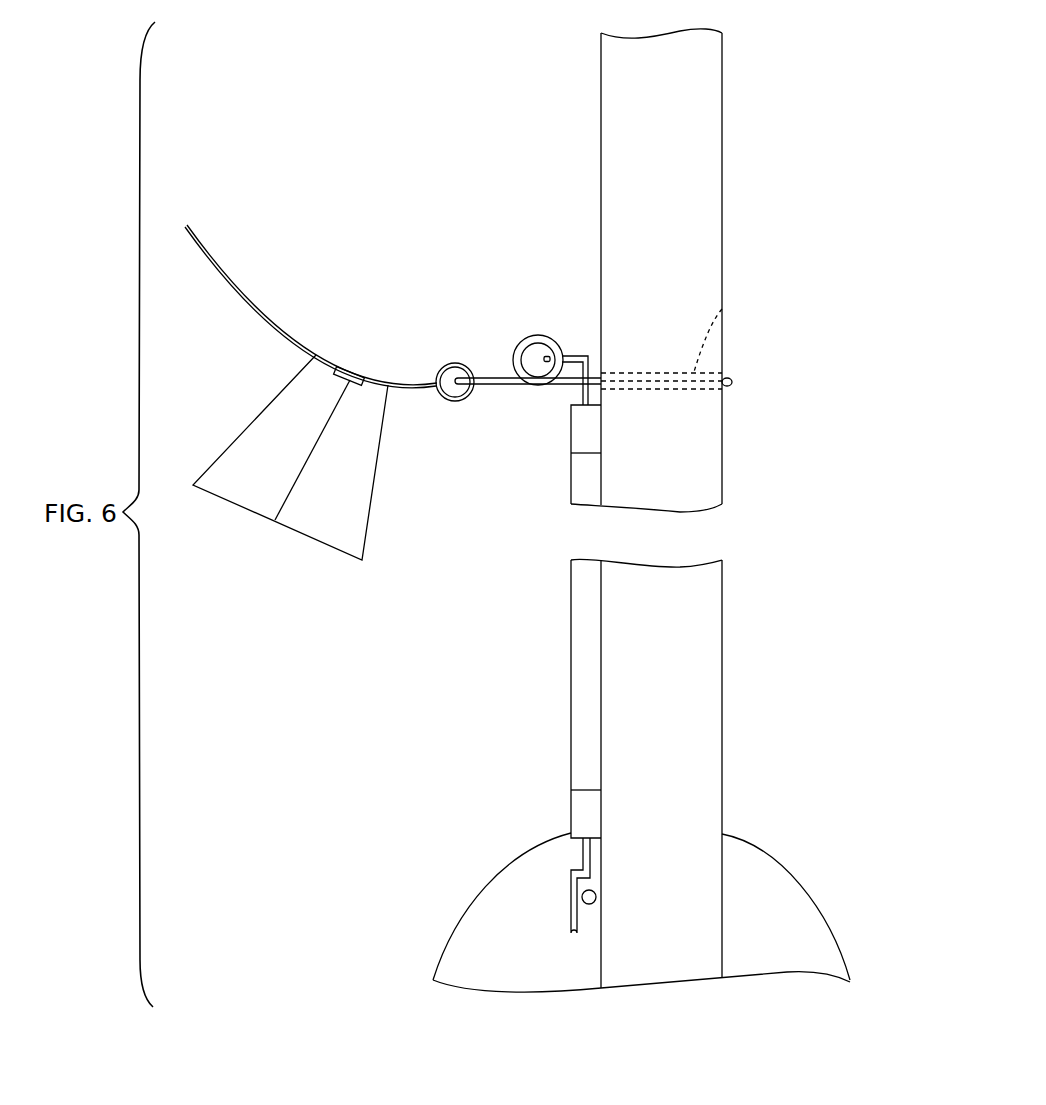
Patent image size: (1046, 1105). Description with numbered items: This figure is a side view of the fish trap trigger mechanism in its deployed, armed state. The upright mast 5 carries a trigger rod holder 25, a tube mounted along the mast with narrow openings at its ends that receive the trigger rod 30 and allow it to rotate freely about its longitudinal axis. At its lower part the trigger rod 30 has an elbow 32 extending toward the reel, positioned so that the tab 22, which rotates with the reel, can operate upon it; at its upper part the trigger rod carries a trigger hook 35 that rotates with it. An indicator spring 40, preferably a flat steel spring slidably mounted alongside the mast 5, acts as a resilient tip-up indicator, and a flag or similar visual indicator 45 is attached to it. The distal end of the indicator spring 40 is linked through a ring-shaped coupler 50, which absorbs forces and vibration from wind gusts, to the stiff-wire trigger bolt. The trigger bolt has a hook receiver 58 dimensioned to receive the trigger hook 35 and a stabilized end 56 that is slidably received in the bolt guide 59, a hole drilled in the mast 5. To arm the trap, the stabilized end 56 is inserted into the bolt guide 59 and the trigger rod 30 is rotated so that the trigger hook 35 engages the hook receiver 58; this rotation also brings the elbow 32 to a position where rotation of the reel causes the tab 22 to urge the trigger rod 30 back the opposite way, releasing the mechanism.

The mast 5 is at (722, 632).
The tab 22 is at (586, 906).
The trigger rod holder 25 is at (570, 478).
The trigger rod 30 is at (583, 857).
The elbow 32 is at (573, 908).
The trigger hook 35 is at (578, 356).
The indicator spring 40 is at (242, 285).
The visual indicator 45 is at (365, 538).
The coupler 50 is at (457, 403).
The stabilized end 56 is at (732, 382).
The hook receiver 58 is at (522, 339).
The bolt guide 59 is at (722, 309).